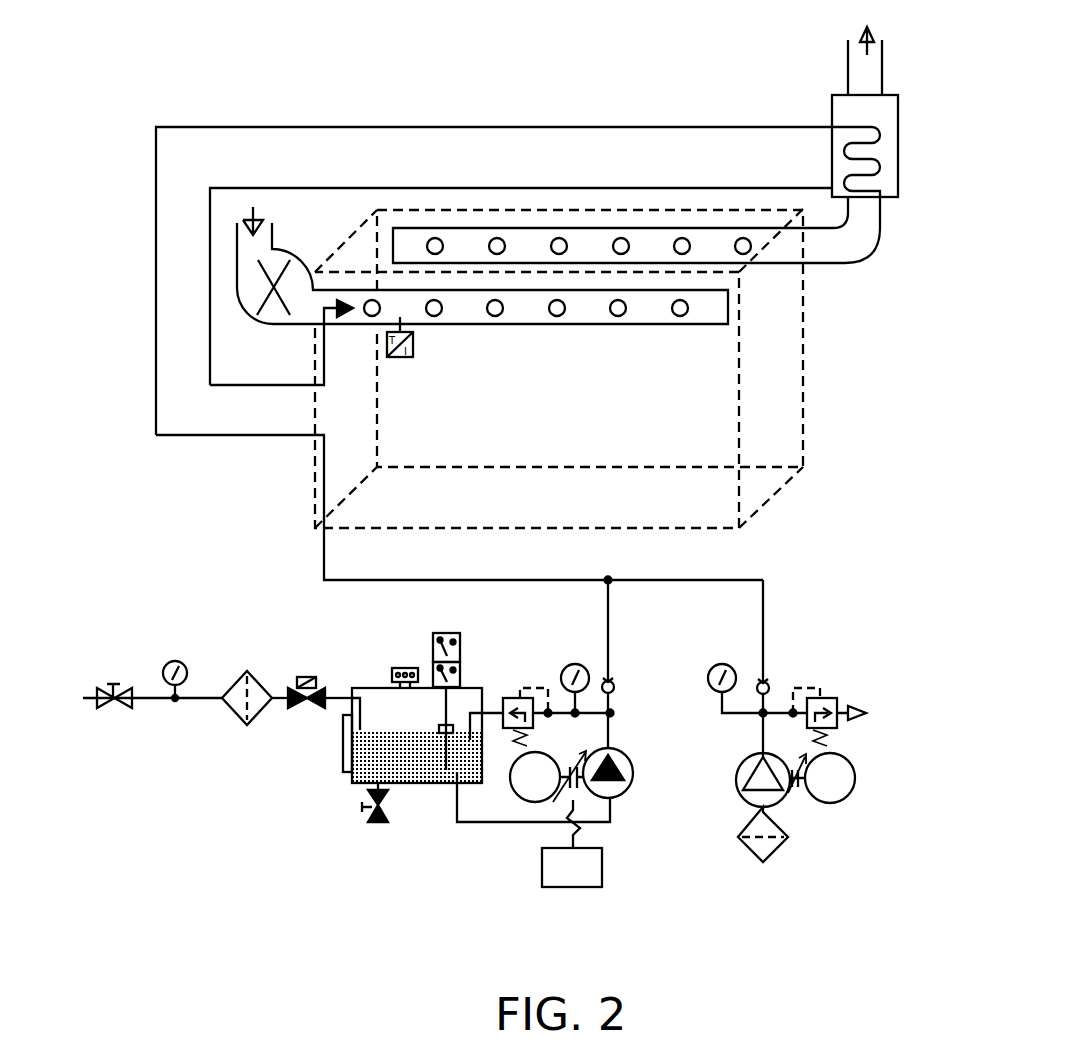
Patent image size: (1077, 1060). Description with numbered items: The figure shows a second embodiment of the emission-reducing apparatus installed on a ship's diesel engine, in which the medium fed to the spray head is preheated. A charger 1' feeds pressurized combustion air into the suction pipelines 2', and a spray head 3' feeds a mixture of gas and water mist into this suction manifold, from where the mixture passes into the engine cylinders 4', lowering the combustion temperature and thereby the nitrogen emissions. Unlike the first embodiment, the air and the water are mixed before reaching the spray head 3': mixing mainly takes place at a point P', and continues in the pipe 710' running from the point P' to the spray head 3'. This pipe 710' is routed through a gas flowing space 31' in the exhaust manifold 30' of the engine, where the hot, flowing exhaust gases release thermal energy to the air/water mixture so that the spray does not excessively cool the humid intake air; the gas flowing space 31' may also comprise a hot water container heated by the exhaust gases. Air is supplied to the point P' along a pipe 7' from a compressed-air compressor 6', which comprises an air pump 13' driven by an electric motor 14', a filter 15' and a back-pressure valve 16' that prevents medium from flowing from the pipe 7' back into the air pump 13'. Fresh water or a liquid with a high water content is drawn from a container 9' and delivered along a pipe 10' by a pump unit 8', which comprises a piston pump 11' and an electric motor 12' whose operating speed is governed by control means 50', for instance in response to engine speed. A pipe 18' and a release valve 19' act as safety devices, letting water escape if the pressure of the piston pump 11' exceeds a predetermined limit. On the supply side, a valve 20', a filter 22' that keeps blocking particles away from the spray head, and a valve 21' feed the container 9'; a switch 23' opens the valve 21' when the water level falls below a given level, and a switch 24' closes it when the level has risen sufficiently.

The charger 1' is at (179, 258).
The suction pipelines 2' is at (445, 292).
The spray head 3' is at (281, 225).
The engine cylinders 4' is at (526, 363).
The pipe 710' is at (477, 325).
The exhaust manifold 30' is at (650, 296).
The gas flowing space 31' is at (894, 178).
The mixing point P' is at (719, 548).
The pipe 10' is at (652, 664).
The pipe 7' is at (811, 661).
The back-pressure valve 16' is at (809, 652).
The electric motor 14' is at (868, 696).
The air pump 13' is at (721, 741).
The piston pump 11' is at (649, 794).
The pump unit 8' is at (609, 818).
The compressed-air compressor 6' is at (836, 819).
The filter 15' is at (741, 845).
The control means 50' is at (527, 844).
The electric motor 12' is at (468, 820).
The container 9' is at (355, 777).
The valve 20' is at (141, 648).
The filter 22' is at (213, 656).
The valve 21' is at (290, 648).
The switch 23' is at (382, 679).
The switch 24' is at (421, 625).
The release valve 19' is at (499, 666).
The pipe 18' is at (556, 649).